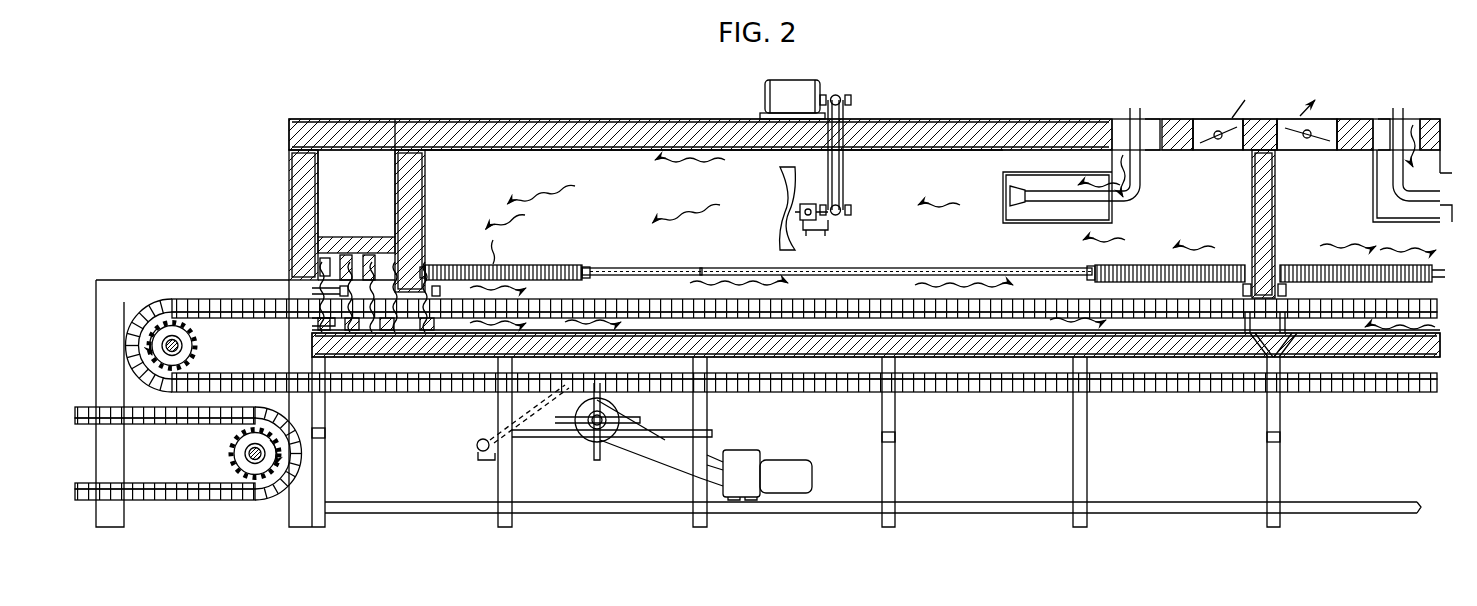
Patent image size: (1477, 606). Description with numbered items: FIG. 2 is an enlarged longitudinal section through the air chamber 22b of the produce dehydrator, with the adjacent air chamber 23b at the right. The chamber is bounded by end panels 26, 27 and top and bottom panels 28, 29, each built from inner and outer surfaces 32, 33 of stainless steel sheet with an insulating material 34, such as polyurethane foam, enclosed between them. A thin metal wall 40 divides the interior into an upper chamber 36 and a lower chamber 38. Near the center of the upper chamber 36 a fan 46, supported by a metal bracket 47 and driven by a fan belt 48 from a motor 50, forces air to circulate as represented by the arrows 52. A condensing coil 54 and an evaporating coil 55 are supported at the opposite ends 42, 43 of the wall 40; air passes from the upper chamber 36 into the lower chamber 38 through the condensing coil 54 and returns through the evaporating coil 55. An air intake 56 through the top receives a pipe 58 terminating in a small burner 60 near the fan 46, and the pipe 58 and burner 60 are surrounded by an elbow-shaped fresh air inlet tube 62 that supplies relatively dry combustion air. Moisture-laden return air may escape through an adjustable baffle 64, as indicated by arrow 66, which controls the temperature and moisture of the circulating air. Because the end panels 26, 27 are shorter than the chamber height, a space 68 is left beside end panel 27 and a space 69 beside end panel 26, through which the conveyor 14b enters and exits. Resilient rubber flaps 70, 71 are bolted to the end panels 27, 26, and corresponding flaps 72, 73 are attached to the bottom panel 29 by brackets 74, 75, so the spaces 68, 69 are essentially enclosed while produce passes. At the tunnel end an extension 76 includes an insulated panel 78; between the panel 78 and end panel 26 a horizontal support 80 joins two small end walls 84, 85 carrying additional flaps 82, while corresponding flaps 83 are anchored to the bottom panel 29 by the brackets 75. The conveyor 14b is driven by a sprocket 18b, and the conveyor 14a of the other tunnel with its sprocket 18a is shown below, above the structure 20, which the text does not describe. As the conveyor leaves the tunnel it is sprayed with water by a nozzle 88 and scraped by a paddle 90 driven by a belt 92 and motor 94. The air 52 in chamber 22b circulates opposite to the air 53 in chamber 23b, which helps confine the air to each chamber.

The conveyor 14a is at (88, 407).
The conveyor 14b is at (200, 300).
The sprocket 18a is at (228, 455).
The sprocket 18b is at (197, 343).
The frame 20 is at (1075, 410).
The air chamber 22b is at (590, 118).
The air chamber 23b is at (1432, 118).
The end panel 26 is at (428, 190).
The end panel 27 is at (1248, 203).
The top panel 28 is at (560, 152).
The bottom panel 29 is at (580, 330).
The inner surface 32 is at (945, 152).
The outer surface 33 is at (922, 118).
The insulating material 34 is at (1000, 130).
The upper chamber 36 is at (619, 230).
The lower chamber 38 is at (847, 289).
The thin metal wall 40 is at (900, 267).
The end of the wall 42 is at (590, 268).
The end of the wall 43 is at (1090, 272).
The fan 46 is at (780, 185).
The metal bracket 47 is at (825, 225).
The fan belt 48 is at (842, 115).
The motor 50 is at (800, 80).
The arrows 52 is at (688, 205).
The air 53 is at (1320, 246).
The condensing coil 54 is at (530, 265).
The evaporating coil 55 is at (1195, 285).
The air intake 56 is at (1150, 120).
The pipe 58 is at (1128, 112).
The burner 60 is at (1008, 197).
The fresh air inlet tube 62 is at (1438, 222).
The adjustable baffle 64 is at (1205, 140).
The arrow 66 is at (1240, 128).
The space 68 is at (1262, 357).
The space 69 is at (398, 357).
The resilient rubber flaps 70 is at (1245, 290).
The resilient rubber flaps 71 is at (395, 285).
The resilient rubber flaps 72 is at (1243, 322).
The resilient rubber flaps 73 is at (425, 320).
The bracket 74 is at (1290, 357).
The bracket 75 is at (318, 357).
The extension 76 is at (350, 116).
The insulated panel 78 is at (288, 200).
The horizontal support 80 is at (335, 238).
The additional resilient flaps 82 is at (312, 297).
The flaps 83 is at (318, 322).
The small end wall 84 is at (320, 262).
The small end wall 85 is at (330, 270).
The nozzle 88 is at (478, 443).
The paddle 90 is at (630, 420).
The belt 92 is at (712, 448).
The motor 94 is at (783, 460).